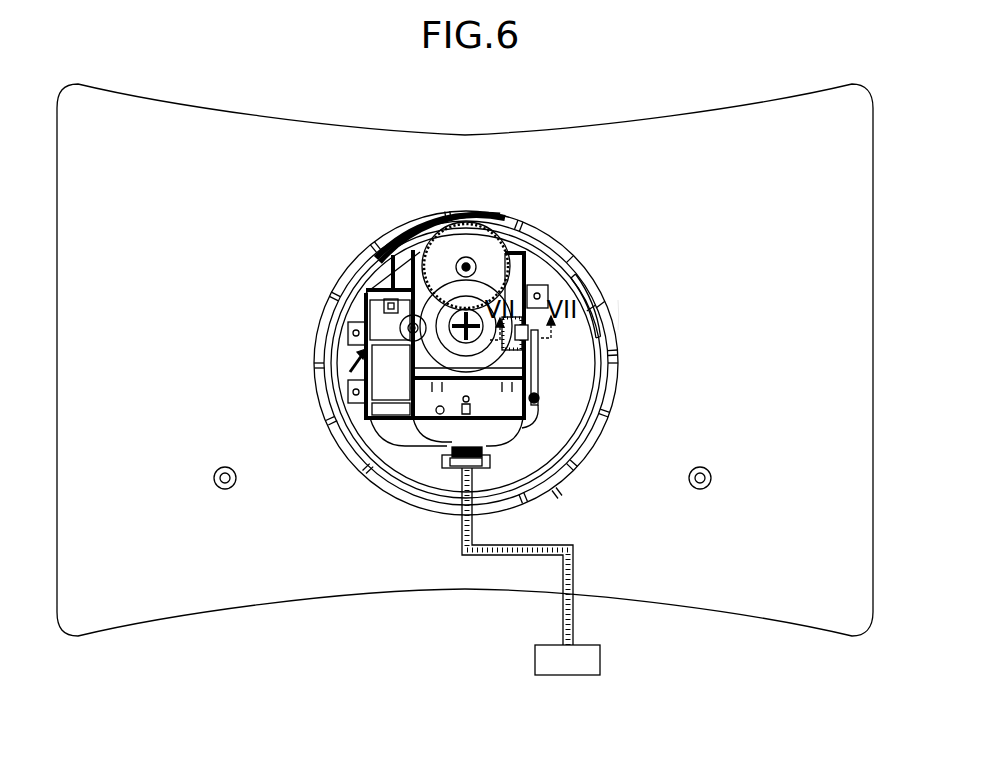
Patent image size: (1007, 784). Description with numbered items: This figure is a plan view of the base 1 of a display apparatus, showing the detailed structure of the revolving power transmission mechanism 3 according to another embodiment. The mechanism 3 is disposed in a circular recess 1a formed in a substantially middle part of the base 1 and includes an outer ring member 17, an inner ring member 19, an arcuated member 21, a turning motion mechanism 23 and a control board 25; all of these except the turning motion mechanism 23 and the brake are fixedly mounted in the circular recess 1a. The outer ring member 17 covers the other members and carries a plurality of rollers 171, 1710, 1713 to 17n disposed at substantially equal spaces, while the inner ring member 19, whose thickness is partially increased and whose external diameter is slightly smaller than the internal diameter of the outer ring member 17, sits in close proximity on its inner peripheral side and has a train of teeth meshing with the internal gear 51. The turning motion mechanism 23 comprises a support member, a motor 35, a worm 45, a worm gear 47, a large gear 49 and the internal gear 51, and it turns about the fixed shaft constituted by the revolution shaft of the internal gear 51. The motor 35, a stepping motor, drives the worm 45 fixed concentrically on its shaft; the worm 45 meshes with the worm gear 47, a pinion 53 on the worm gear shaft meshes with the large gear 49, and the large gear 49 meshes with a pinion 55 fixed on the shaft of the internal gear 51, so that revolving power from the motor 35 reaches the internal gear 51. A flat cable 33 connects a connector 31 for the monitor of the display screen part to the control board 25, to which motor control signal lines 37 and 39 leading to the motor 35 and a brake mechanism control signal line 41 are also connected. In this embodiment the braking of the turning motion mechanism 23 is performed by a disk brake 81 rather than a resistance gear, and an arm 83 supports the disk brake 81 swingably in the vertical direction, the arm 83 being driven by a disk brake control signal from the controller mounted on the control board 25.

The base 1 is at (612, 192).
The circular recess 1a is at (619, 330).
The revolving power transmission mechanism 3 is at (298, 302).
The outer ring member 17 is at (532, 224).
The roller 171 is at (327, 424).
The roller 1710 is at (619, 358).
The roller 1713 is at (558, 498).
The roller 17n is at (362, 468).
The inner ring member 19 is at (378, 262).
The arcuated member 21 is at (574, 282).
The turning motion mechanism 23 is at (347, 386).
The control board 25 is at (452, 470).
The connector 31 is at (570, 676).
The cable 33 is at (515, 557).
The motor 35 is at (364, 405).
The motor control signal line 37 is at (384, 422).
The motor control signal line 39 is at (413, 440).
The brake mechanism control signal line 41 is at (522, 420).
The worm 45 is at (350, 331).
The worm gear 47 is at (386, 303).
The large gear 49 is at (534, 300).
The internal gear 51 is at (437, 231).
The pinion 53 is at (410, 316).
The pinion 55 is at (467, 257).
The disk brake 81 is at (538, 340).
The arm 83 is at (538, 362).